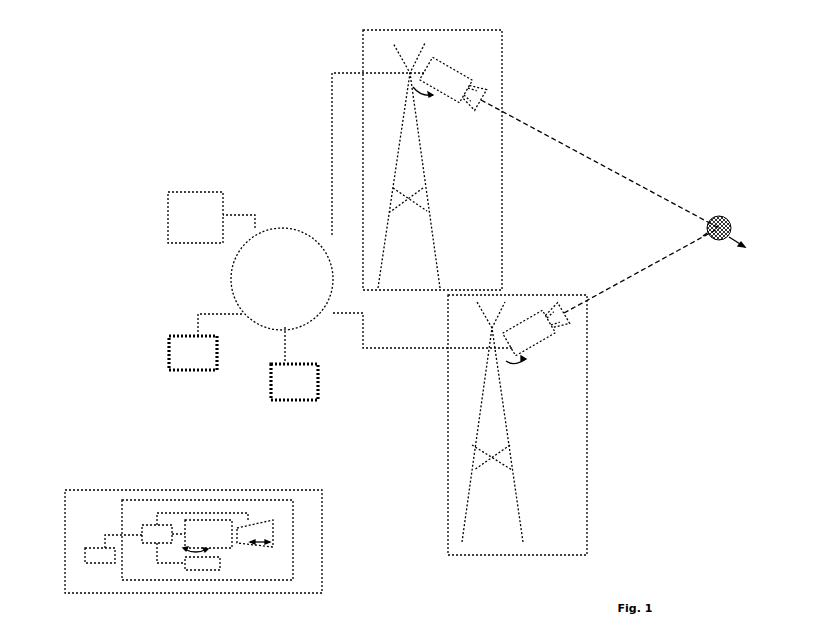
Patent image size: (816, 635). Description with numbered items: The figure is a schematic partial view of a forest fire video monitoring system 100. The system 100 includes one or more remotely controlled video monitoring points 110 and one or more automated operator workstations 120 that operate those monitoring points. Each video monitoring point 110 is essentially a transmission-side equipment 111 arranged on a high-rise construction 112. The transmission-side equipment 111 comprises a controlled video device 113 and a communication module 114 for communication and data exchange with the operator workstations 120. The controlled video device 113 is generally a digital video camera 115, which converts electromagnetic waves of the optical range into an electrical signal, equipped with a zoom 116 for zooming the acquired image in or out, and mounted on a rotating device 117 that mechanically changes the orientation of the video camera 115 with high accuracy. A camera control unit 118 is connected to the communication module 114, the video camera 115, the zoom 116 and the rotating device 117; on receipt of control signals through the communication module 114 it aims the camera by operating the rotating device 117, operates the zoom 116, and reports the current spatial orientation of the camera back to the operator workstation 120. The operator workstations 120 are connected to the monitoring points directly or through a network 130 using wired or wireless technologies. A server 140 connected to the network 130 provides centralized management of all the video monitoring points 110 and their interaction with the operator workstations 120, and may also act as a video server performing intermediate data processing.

The forest fire video monitoring system 100 is at (572, 29).
The video monitoring point 110 is at (475, 292).
The transmission-side equipment 111 is at (392, 325).
The high-rise construction 112 is at (450, 292).
The controlled video device 113 is at (207, 540).
The communication module 114 is at (113, 549).
The digital video camera 115 is at (207, 536).
The zoom 116 is at (255, 533).
The rotating device 117 is at (202, 563).
The camera control unit 118 is at (195, 538).
The operator workstation 120 is at (243, 368).
The network 130 is at (355, 218).
The server 140 is at (195, 217).